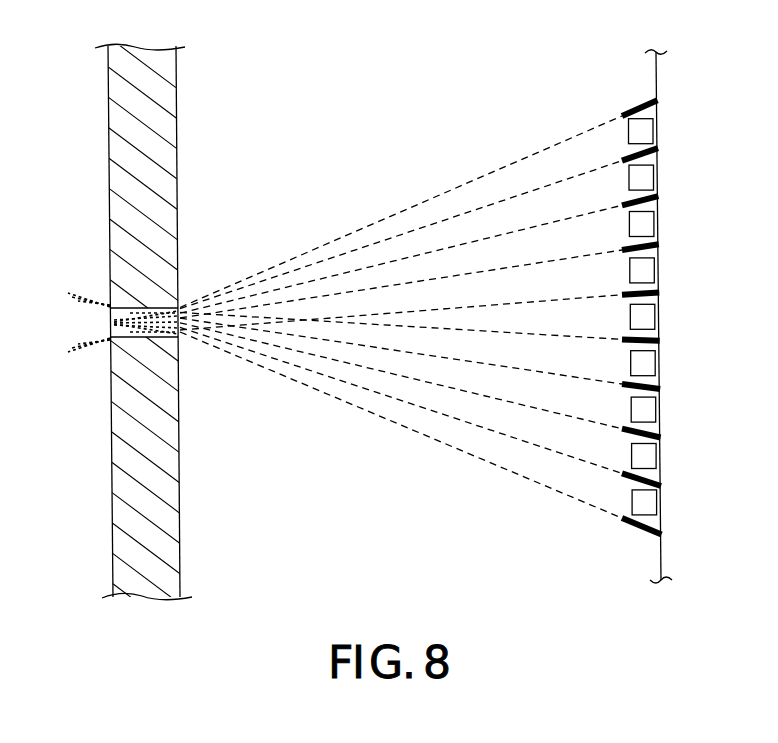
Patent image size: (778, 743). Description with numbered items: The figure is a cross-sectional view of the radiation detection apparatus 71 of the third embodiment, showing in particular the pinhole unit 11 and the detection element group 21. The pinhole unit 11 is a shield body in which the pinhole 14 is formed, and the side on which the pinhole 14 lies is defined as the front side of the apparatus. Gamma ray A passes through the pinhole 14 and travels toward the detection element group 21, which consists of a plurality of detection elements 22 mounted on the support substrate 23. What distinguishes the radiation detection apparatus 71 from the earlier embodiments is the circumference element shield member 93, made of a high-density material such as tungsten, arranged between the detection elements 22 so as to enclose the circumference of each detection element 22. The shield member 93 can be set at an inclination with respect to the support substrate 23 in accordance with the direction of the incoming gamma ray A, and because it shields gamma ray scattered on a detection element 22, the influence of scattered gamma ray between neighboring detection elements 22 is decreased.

The pinhole unit 11 is at (108, 141).
The pinhole 14 is at (122, 322).
The gamma ray A is at (83, 355).
The detection element group 21 is at (623, 299).
The detection element 22 is at (628, 130).
The support substrate 23 is at (657, 72).
The circumference element shield member 93 is at (658, 107).
The radiation detection apparatus 71 is at (383, 539).